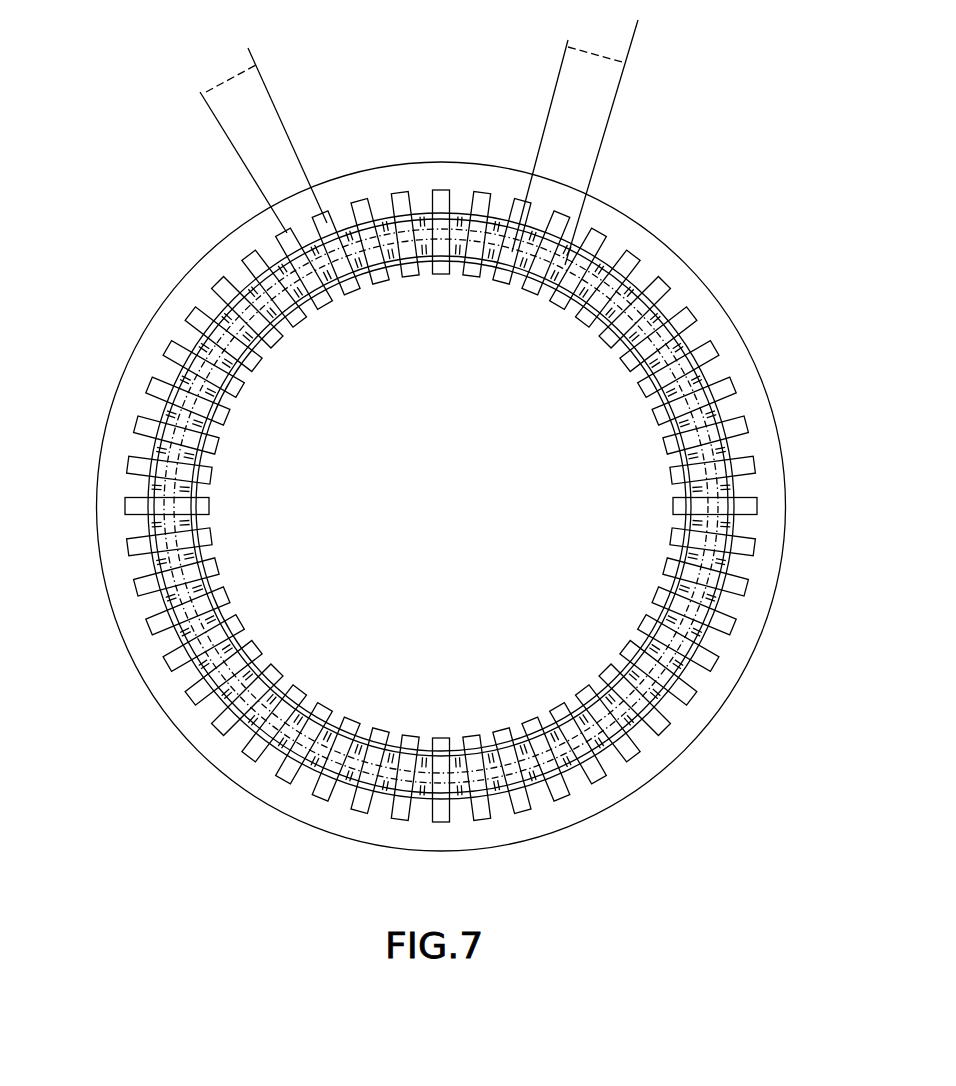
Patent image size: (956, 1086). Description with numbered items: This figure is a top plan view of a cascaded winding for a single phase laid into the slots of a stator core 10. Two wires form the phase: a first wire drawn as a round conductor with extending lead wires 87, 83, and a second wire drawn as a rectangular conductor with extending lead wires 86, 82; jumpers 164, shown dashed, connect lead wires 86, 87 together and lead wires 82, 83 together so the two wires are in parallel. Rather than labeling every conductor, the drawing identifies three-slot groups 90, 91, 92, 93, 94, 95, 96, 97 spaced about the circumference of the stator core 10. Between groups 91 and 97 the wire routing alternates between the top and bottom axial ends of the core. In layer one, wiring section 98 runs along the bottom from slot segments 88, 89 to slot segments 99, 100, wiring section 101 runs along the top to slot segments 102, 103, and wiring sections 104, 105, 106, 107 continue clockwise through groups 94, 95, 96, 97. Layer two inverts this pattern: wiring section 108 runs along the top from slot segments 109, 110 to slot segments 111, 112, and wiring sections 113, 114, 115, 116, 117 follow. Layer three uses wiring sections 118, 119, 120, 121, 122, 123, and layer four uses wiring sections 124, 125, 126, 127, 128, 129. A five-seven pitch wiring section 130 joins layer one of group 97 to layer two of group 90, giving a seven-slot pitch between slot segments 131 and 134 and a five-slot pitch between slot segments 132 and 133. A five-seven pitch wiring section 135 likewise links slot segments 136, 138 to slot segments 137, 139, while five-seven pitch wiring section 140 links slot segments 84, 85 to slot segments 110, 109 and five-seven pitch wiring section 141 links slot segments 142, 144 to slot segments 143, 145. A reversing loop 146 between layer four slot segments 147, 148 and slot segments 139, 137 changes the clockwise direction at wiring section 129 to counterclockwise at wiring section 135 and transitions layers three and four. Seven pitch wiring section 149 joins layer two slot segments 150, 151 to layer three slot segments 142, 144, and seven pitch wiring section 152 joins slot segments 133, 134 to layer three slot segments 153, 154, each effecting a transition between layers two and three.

The stator core 10 is at (717, 302).
The extending lead wire 82 is at (203, 100).
The extending lead wire 83 is at (253, 55).
The slot segment 84 is at (291, 231).
The slot segment 85 is at (330, 221).
The extending lead wire 86 is at (560, 55).
The extending lead wire 87 is at (630, 47).
The layer one slot segment 88 is at (525, 210).
The layer one slot segment 89 is at (573, 222).
The three-slot group 90 is at (327, 310).
The three-slot group 91 is at (485, 285).
The three-slot group 92 is at (663, 448).
The three-slot group 93 is at (637, 622).
The three-slot group 94 is at (562, 695).
The three-slot group 95 is at (390, 730).
The three-slot group 96 is at (213, 563).
The three-slot group 97 is at (240, 390).
The wiring section 98 is at (640, 235).
The layer one slot segment 99 is at (713, 348).
The layer one slot segment 100 is at (727, 383).
The wiring section 101 is at (733, 403).
The layer one slot segment 102 is at (743, 592).
The layer one slot segment 103 is at (730, 627).
The wiring section 104 is at (713, 643).
The wiring section 105 is at (540, 797).
The wiring section 106 is at (300, 795).
The wiring section 107 is at (147, 610).
The wiring section 108 is at (643, 247).
The layer two slot segment 109 is at (500, 210).
The layer two slot segment 110 is at (615, 252).
The layer two slot segment 111 is at (697, 337).
The layer two slot segment 112 is at (733, 368).
The wiring section 113 is at (740, 427).
The wiring section 114 is at (697, 673).
The wiring section 115 is at (517, 807).
The wiring section 116 is at (263, 788).
The wiring section 117 is at (140, 573).
The wiring section 118 is at (608, 335).
The wiring section 119 is at (750, 467).
The wiring section 120 is at (640, 647).
The wiring section 121 is at (480, 750).
The wiring section 122 is at (240, 775).
The wiring section 123 is at (137, 550).
The wiring section 124 is at (625, 345).
The wiring section 125 is at (677, 470).
The wiring section 126 is at (613, 670).
The wiring section 127 is at (443, 750).
The wiring section 128 is at (298, 725).
The wiring section 129 is at (197, 545).
The 5-7 pitch wiring section 130 is at (205, 330).
The slot segment 131 is at (150, 418).
The slot segment 132 is at (150, 392).
The slot segment 133 is at (275, 243).
The slot segment 134 is at (348, 228).
The 5-7 pitch wiring section 135 is at (255, 335).
The slot segment 136 is at (175, 360).
The slot segment 137 is at (392, 270).
The slot segment 138 is at (185, 340).
The slot segment 139 is at (345, 300).
The 5-7 pitch wiring section 140 is at (420, 216).
The 5-7 pitch wiring section 141 is at (418, 268).
The slot segment 142 is at (364, 228).
The slot segment 143 is at (515, 280).
The slot segment 144 is at (410, 215).
The slot segment 145 is at (555, 325).
The reversing loop 146 is at (275, 365).
The layer four slot segment 147 is at (175, 365).
The layer four slot segment 148 is at (195, 335).
The seven pitch wiring section 149 is at (296, 295).
The layer two slot segment 150 is at (150, 440).
The layer two slot segment 151 is at (150, 395).
The seven pitch wiring section 152 is at (458, 232).
The layer three slot segment 153 is at (493, 270).
The layer three slot segment 154 is at (555, 308).
The jumper 164 is at (226, 76).